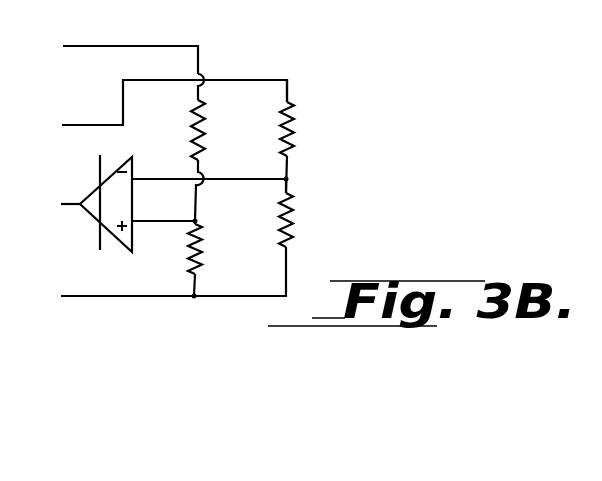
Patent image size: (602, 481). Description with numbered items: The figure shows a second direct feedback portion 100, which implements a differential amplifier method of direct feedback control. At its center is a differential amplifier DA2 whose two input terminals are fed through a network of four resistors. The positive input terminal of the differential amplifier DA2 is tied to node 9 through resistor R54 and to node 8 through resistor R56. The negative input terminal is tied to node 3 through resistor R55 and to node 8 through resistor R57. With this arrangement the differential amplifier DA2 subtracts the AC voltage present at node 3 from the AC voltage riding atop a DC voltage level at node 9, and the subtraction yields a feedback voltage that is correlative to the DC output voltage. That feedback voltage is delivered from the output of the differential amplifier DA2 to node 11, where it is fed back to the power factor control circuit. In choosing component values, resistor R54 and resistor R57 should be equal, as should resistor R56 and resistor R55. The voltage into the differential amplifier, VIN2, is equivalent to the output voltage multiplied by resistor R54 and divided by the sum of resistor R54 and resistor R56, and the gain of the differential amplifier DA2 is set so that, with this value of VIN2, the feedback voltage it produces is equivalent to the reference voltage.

The node 9 is at (112, 51).
The node 3 is at (156, 111).
The node 11 is at (52, 204).
The node 8 is at (155, 280).
The second direct feedback portion 100 is at (318, 115).
The differential amplifier DA2 is at (106, 203).
The voltage into the differential amplifier VIN2 is at (210, 200).
The resistor R54 is at (225, 147).
The resistor R55 is at (316, 147).
The resistor R56 is at (223, 258).
The resistor R57 is at (314, 213).